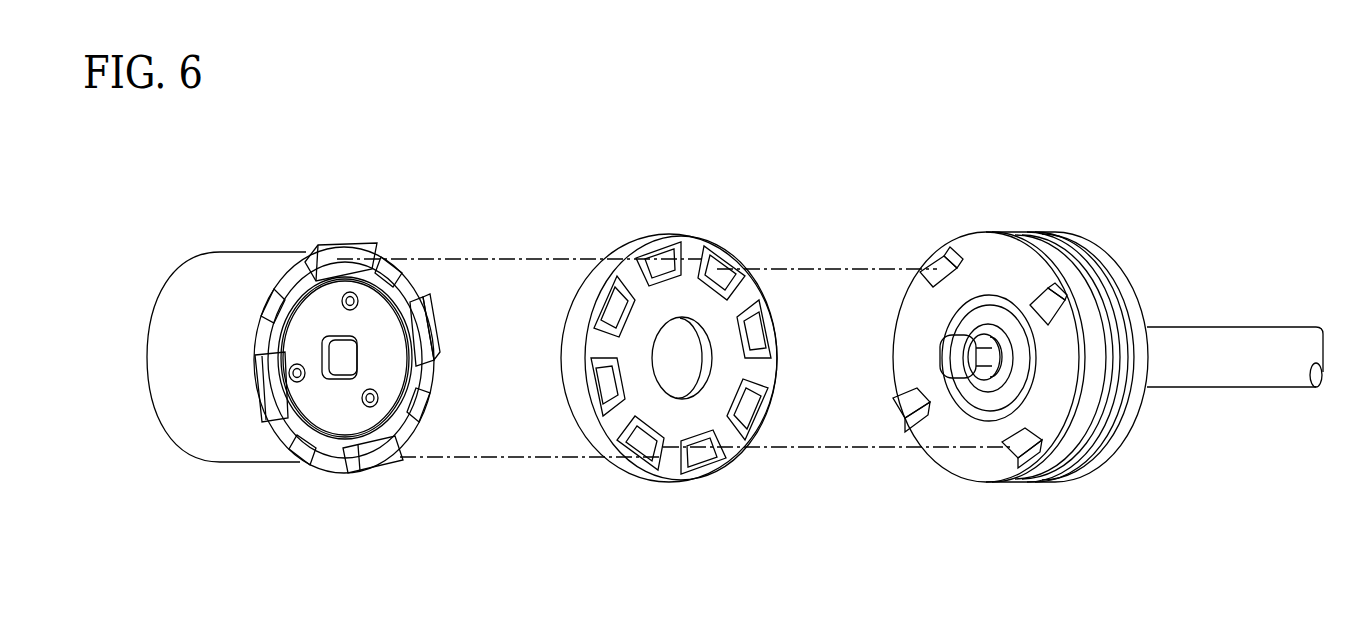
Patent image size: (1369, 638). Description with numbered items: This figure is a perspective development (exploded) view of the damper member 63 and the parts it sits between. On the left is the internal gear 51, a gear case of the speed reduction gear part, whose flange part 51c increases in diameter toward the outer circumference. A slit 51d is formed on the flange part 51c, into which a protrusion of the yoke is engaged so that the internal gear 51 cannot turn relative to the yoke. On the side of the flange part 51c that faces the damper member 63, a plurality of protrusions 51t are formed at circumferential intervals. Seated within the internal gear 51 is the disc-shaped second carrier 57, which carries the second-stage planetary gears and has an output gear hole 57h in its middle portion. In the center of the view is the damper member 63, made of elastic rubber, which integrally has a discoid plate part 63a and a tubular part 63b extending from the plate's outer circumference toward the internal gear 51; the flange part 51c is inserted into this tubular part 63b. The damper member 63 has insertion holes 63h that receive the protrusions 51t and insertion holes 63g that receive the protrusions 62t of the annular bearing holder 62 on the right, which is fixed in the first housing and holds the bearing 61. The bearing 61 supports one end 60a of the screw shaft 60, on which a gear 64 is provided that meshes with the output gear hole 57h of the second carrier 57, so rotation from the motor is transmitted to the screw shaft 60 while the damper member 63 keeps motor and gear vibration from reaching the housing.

The internal gear 51 is at (253, 260).
The flange part 51c is at (318, 247).
The protrusions 51t is at (347, 250).
The slit 51d is at (403, 273).
The second carrier 57 is at (328, 405).
The output gear hole 57h is at (357, 354).
The damper member 63 is at (660, 222).
The plate part 63a is at (628, 365).
The tubular part 63b is at (558, 347).
The insertion holes 63g is at (612, 292).
The insertion holes 63h is at (672, 252).
The bearing holder 62 is at (1048, 470).
The protrusions 62t is at (935, 262).
The bearing 61 is at (1008, 316).
The screw shaft 60 is at (1243, 327).
The one end of the screw shaft 60a is at (1017, 360).
The gear 64 is at (947, 353).